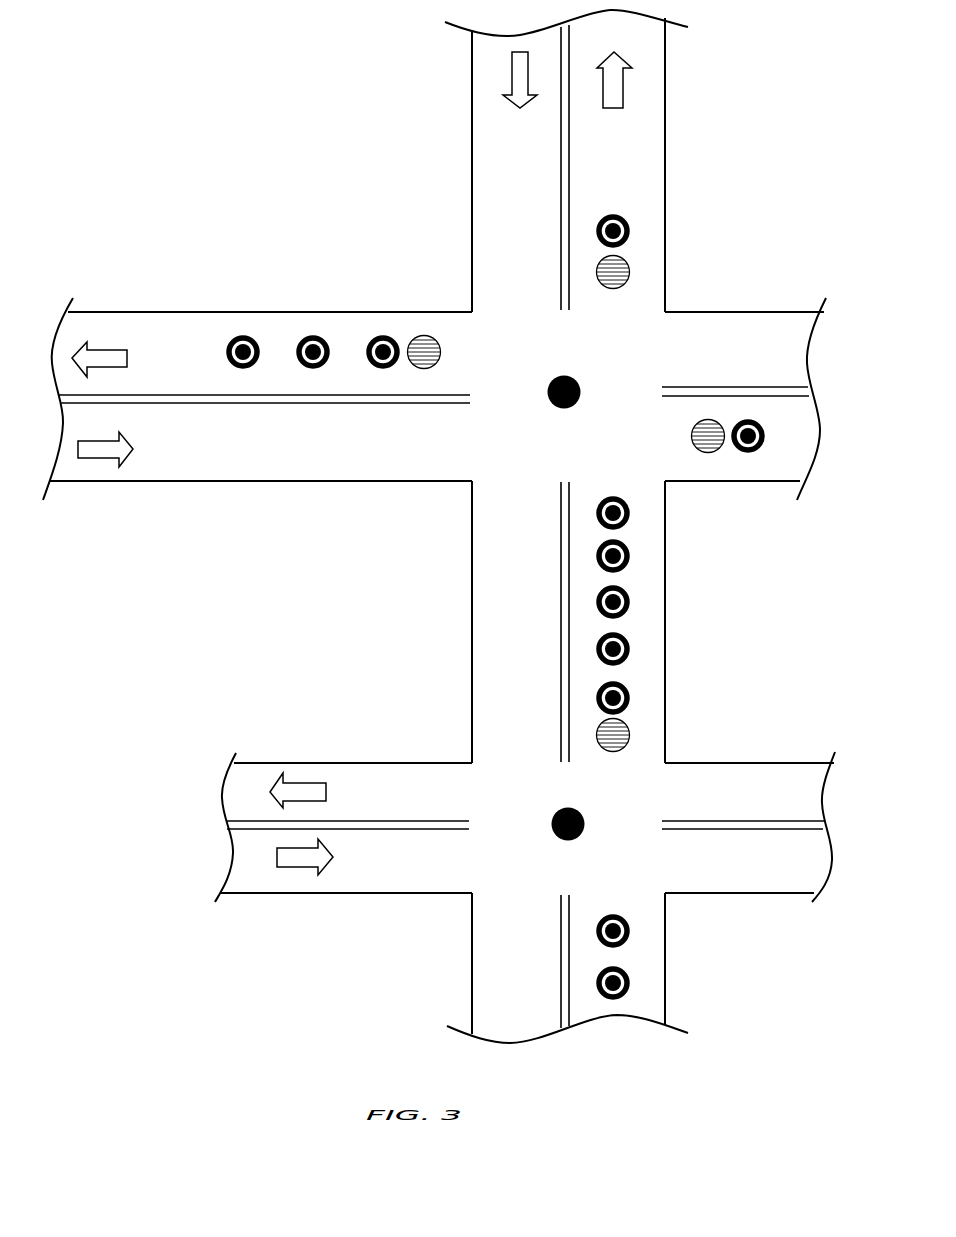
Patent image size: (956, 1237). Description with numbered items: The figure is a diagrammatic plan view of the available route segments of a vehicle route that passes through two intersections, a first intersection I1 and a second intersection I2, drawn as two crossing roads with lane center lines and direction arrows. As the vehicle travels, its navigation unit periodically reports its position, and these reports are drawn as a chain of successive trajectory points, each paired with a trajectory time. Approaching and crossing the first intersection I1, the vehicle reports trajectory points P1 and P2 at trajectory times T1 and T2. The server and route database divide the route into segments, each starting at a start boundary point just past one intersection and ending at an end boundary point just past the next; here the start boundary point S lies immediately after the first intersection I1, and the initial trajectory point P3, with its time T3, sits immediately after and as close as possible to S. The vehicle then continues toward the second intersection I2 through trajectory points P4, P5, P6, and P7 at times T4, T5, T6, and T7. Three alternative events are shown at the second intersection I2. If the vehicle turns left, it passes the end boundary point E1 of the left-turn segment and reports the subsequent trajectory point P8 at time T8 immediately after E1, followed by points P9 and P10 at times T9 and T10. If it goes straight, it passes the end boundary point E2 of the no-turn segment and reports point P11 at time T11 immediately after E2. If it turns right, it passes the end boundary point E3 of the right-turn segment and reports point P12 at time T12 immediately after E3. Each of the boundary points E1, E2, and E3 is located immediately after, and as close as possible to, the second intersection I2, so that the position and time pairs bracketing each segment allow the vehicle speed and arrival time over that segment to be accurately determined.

The trajectory time T1 is at (600, 983).
The trajectory point P1 is at (613, 983).
The trajectory time T2 is at (600, 931).
The trajectory point P2 is at (613, 931).
The trajectory time T3 is at (600, 698).
The initial trajectory point P3 is at (613, 698).
The trajectory time T4 is at (600, 649).
The trajectory point P4 is at (613, 649).
The trajectory time T5 is at (600, 602).
The trajectory point P5 is at (613, 602).
The trajectory time T6 is at (600, 556).
The trajectory point P6 is at (613, 556).
The trajectory time T7 is at (600, 513).
The trajectory point P7 is at (613, 513).
The trajectory time T8 is at (383, 364).
The subsequent trajectory point P8 is at (383, 354).
The trajectory time T9 is at (313, 364).
The trajectory point P9 is at (313, 354).
The trajectory time T10 is at (241, 342).
The trajectory point P10 is at (240, 355).
The trajectory time T11 is at (600, 219).
The subsequent trajectory point P11 is at (611, 219).
The trajectory time T12 is at (746, 449).
The subsequent trajectory point P12 is at (746, 440).
The end boundary point E1 is at (432, 344).
The end boundary point E2 is at (624, 276).
The end boundary point E3 is at (697, 431).
The start boundary point S is at (622, 735).
The first intersection I1 is at (580, 824).
The second intersection I2 is at (577, 392).